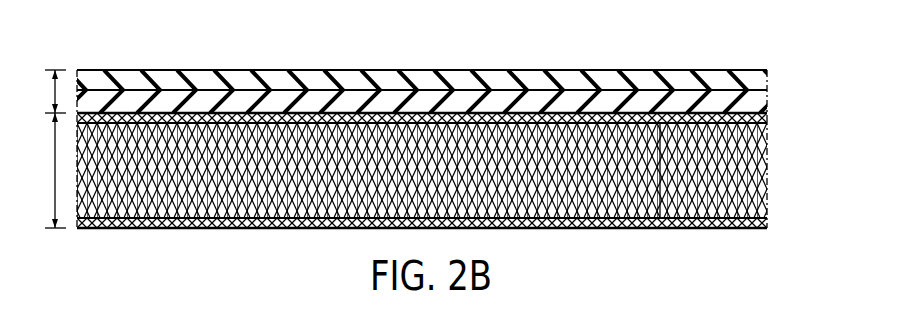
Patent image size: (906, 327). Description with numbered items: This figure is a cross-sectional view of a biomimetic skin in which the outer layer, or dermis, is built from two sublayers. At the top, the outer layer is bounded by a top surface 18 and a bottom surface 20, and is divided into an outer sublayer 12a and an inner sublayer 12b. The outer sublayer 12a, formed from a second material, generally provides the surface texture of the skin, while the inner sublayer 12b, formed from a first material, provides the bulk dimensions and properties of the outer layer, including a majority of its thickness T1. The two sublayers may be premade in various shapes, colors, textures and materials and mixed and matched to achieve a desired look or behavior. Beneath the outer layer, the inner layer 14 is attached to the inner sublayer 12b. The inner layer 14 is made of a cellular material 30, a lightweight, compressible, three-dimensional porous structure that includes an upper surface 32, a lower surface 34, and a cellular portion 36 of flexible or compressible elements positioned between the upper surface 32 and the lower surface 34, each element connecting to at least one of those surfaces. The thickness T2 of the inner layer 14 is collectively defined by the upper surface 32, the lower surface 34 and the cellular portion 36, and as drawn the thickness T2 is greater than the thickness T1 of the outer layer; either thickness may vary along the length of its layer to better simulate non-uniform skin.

The outer sublayer 12a is at (198, 80).
The inner sublayer 12b is at (628, 100).
The inner layer 14 is at (177, 205).
The top surface 18 is at (328, 70).
The bottom surface 20 is at (518, 88).
The cellular material 30 is at (522, 202).
The upper surface 32 is at (768, 117).
The lower surface 34 is at (768, 223).
The cellular portion 36 is at (670, 173).
The thickness of the outer layer T1 is at (57, 91).
The thickness of the inner layer T2 is at (57, 172).